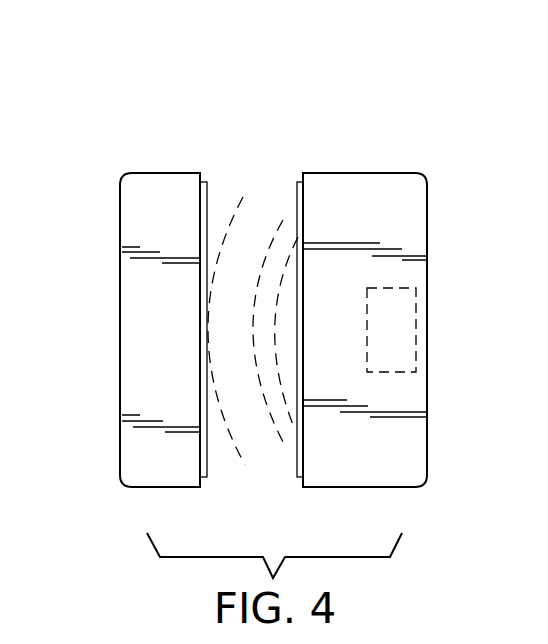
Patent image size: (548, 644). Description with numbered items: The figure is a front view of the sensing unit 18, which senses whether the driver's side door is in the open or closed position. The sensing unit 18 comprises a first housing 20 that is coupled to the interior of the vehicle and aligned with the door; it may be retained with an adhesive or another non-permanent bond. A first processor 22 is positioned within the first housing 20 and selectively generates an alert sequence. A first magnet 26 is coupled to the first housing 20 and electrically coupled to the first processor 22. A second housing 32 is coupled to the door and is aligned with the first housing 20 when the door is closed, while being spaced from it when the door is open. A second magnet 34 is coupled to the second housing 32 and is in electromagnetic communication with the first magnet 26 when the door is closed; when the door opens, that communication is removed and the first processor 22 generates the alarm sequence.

The sensing unit 18 is at (256, 130).
The first housing 20 is at (425, 178).
The first processor 22 is at (397, 289).
The first magnet 26 is at (287, 185).
The second housing 32 is at (120, 199).
The second magnet 34 is at (207, 187).